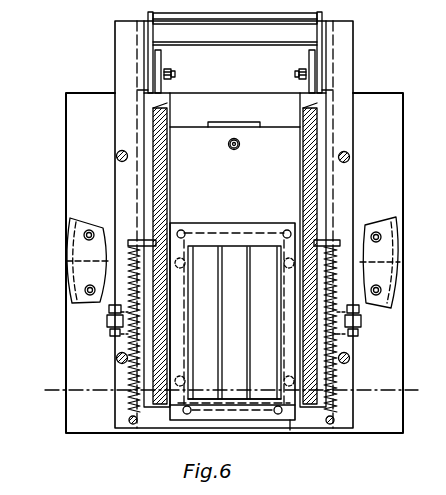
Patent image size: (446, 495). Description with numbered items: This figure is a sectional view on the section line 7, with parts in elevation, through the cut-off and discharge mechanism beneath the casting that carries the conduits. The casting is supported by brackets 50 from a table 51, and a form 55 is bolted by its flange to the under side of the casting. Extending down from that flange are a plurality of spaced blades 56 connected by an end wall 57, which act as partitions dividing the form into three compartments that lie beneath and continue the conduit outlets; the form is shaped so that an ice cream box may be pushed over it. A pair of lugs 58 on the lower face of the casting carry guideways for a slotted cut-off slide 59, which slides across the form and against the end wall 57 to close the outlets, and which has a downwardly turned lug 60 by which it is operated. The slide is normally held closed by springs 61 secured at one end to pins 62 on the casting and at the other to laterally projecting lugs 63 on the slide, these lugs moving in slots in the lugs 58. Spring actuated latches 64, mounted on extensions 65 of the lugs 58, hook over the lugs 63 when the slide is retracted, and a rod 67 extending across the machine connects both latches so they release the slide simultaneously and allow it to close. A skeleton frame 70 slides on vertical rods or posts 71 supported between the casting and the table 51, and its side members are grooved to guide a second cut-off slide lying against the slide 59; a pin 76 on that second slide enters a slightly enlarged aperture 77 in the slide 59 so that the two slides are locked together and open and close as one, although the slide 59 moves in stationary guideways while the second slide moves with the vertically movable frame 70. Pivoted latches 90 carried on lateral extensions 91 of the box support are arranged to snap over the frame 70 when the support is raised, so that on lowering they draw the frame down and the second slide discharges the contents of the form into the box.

The section line 7 is at (231, 391).
The brackets 50 is at (66, 296).
The table 51 is at (394, 136).
The form 55 is at (227, 224).
The blades 56 is at (234, 322).
The end wall 57 is at (226, 404).
The lugs 58 is at (158, 183).
The cut-off slide 59 is at (178, 125).
The downwardly turned lug 60 is at (232, 123).
The springs 61 is at (128, 270).
The pins 62 is at (336, 420).
The laterally projecting lugs 63 is at (337, 238).
The spring actuated latches 64 is at (150, 44).
The extensions 65 is at (161, 62).
The rod 67 is at (250, 18).
The skeleton frame 70 is at (290, 430).
The vertical rods or posts 71 is at (116, 157).
The pin 76 is at (231, 147).
The aperture 77 is at (239, 145).
The pivoted latches 90 is at (106, 322).
The lateral extensions 91 is at (360, 312).